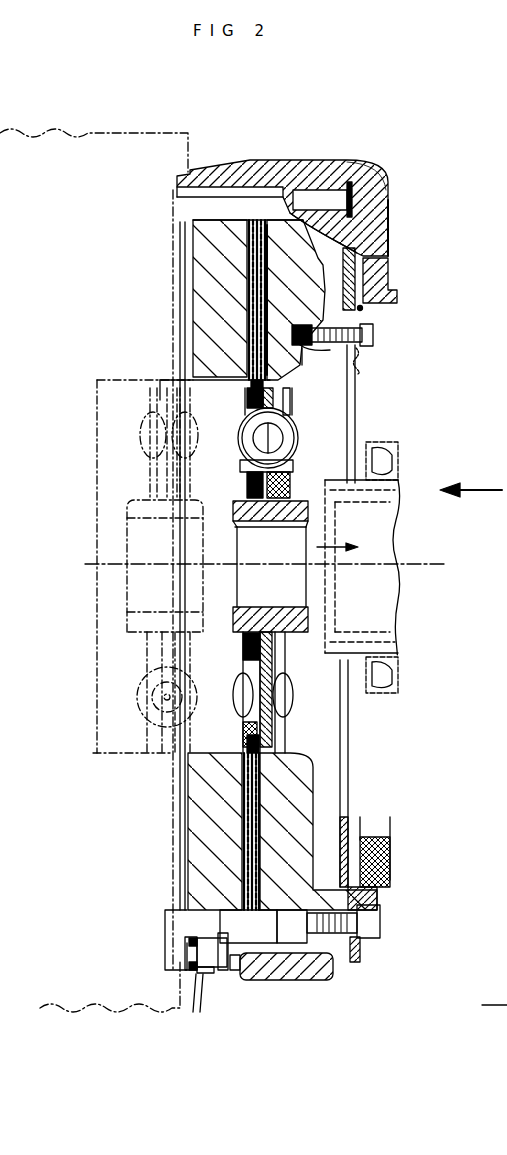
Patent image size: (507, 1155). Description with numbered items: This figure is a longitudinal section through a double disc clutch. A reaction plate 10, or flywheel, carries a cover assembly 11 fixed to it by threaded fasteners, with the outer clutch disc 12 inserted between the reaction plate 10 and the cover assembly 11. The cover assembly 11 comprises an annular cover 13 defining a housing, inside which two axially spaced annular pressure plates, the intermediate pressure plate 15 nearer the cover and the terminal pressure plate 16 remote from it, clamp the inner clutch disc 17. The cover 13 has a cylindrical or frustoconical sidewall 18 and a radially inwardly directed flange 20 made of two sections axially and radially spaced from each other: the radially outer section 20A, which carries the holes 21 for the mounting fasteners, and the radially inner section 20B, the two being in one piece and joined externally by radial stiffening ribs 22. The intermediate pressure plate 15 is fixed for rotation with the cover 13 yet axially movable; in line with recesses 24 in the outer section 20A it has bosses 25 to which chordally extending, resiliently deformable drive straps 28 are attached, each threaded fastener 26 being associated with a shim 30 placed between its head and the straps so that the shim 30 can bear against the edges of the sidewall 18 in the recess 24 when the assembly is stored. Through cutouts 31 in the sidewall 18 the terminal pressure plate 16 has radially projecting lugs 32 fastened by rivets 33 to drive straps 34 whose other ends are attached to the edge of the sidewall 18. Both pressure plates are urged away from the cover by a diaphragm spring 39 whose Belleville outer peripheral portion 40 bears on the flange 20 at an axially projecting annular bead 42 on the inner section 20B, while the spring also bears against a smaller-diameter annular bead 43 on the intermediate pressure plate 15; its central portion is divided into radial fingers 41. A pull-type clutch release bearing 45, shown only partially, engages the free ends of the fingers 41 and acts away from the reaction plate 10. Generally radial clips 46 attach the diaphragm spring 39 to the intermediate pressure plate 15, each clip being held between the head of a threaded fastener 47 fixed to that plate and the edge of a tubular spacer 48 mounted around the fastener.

The reaction plate 10 is at (194, 140).
The cover assembly 11 is at (356, 140).
The outer clutch disc 12 is at (168, 236).
The annular cover 13 is at (405, 212).
The intermediate pressure plate 15 is at (287, 207).
The terminal pressure plate 16 is at (224, 206).
The inner clutch disc 17 is at (256, 208).
The sidewall 18 is at (313, 166).
The flange 20 is at (405, 262).
The radially outer section 20A is at (313, 237).
The radially inner section 20B is at (388, 278).
The holes 21 is at (353, 205).
The radial stiffening ribs 22 is at (387, 189).
The recesses 24 is at (368, 898).
The bosses 25 is at (342, 946).
The threaded fastener 26 is at (374, 938).
The drive straps 28 is at (372, 860).
The shim 30 is at (361, 966).
The cutouts 31 is at (237, 964).
The lugs 32 is at (218, 981).
The rivets 33 is at (182, 951).
The drive straps 34 is at (204, 1006).
The diaphragm spring 39 is at (367, 394).
The outer peripheral portion 40 is at (358, 267).
The radial fingers 41 is at (358, 432).
The annular bead 42 is at (270, 292).
The annular bead 43 is at (318, 822).
The clutch release bearing 45 is at (403, 622).
The clips 46 is at (364, 310).
The threaded fasteners 47 is at (374, 335).
The tubular spacers 48 is at (327, 353).